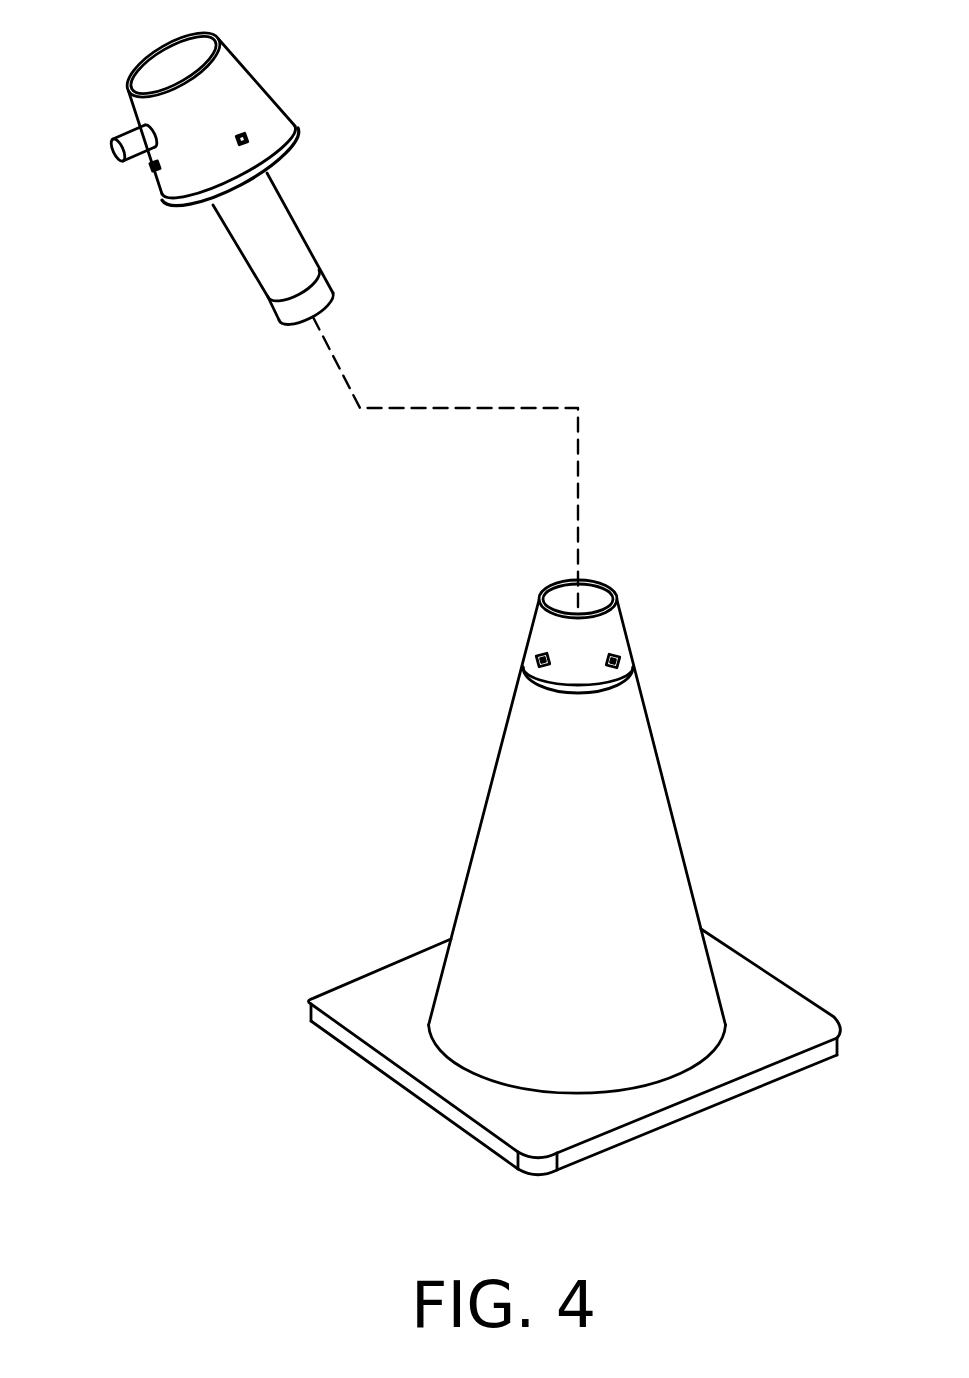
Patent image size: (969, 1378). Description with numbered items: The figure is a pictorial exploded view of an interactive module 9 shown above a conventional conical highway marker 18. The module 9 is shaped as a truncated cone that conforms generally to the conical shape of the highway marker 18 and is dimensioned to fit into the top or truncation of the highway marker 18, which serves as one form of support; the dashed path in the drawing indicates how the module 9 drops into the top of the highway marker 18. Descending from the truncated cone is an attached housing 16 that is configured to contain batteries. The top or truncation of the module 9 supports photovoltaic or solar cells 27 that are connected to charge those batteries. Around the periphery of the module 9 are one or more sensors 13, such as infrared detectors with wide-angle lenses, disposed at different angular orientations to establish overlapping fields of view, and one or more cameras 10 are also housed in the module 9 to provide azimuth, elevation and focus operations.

The interactive module 9 is at (247, 67).
The photovoltaic or solar cells 27 is at (170, 68).
The camera 10 is at (130, 134).
The sensor 13 is at (248, 137).
The housing 16 is at (296, 243).
The highway marker 18 is at (646, 849).